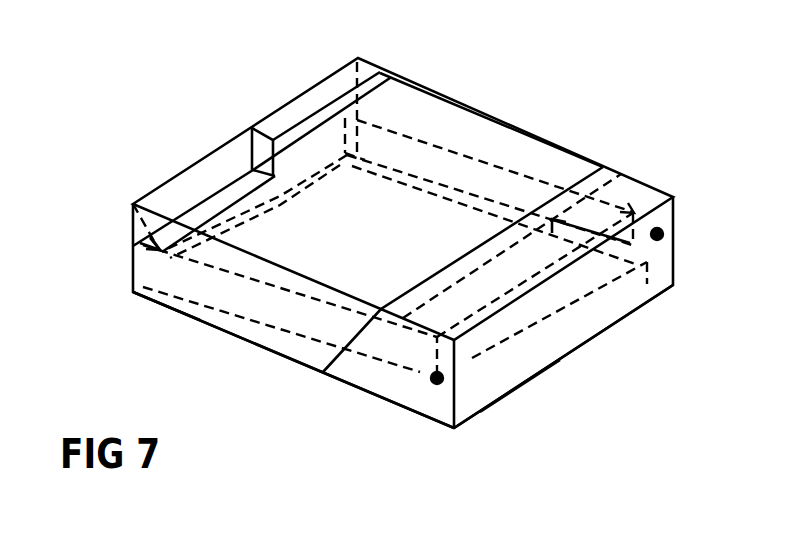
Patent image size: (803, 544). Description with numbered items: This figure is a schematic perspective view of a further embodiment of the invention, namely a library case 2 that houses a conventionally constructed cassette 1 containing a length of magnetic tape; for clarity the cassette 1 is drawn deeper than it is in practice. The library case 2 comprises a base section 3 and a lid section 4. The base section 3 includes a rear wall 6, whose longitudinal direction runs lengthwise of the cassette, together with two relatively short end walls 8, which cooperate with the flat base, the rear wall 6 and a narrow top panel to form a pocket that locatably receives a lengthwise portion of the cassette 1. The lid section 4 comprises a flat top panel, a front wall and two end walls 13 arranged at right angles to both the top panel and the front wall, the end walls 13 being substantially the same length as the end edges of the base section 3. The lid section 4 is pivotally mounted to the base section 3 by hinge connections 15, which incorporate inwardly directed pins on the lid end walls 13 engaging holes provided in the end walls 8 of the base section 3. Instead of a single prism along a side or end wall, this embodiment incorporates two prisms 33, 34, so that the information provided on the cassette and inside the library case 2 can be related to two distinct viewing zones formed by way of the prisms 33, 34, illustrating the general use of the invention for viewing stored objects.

The cassette 1 is at (198, 292).
The library case 2 is at (211, 358).
The base section 3 is at (516, 392).
The lid section 4 is at (488, 98).
The rear wall 6 is at (578, 324).
The end walls 8 is at (390, 384).
The end walls 13 is at (523, 158).
The hinge connections 15 is at (432, 394).
The prism 33 is at (202, 184).
The prism 34 is at (313, 102).